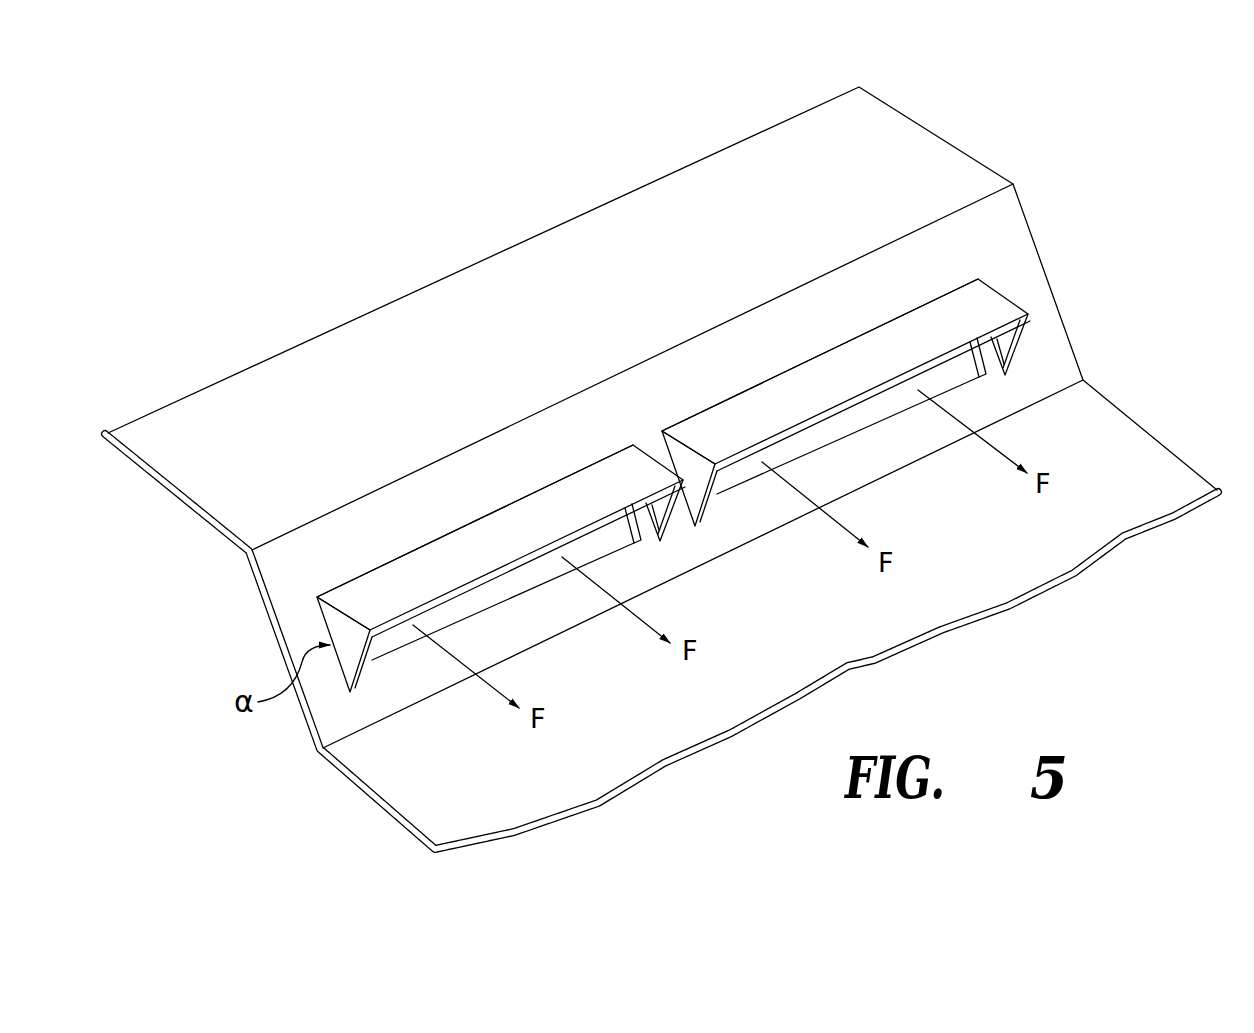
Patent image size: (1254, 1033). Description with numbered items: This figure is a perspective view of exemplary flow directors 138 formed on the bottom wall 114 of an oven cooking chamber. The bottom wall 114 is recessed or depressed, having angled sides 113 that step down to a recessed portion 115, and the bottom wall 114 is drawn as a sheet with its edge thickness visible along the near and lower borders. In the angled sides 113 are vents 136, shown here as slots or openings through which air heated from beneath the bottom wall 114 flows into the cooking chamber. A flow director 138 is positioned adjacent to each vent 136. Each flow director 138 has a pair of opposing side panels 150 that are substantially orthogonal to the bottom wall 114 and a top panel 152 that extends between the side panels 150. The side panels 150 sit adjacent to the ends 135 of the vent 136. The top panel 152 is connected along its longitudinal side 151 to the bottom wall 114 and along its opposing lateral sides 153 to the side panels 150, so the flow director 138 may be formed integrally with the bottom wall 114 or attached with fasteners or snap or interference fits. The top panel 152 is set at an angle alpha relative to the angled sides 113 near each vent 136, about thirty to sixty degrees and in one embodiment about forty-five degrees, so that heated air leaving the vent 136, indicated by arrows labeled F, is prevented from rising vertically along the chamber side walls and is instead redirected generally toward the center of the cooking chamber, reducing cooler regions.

The angled sides 113 is at (1027, 290).
The bottom wall 114 is at (943, 128).
The recessed portion 115 is at (1155, 468).
The ends 135 is at (380, 659).
The vent 136 is at (515, 590).
The flow director 138 is at (686, 484).
The side panels 150 is at (345, 658).
The longitudinal side 151 is at (548, 483).
The top panel 152 is at (480, 547).
The lateral sides 153 is at (368, 616).